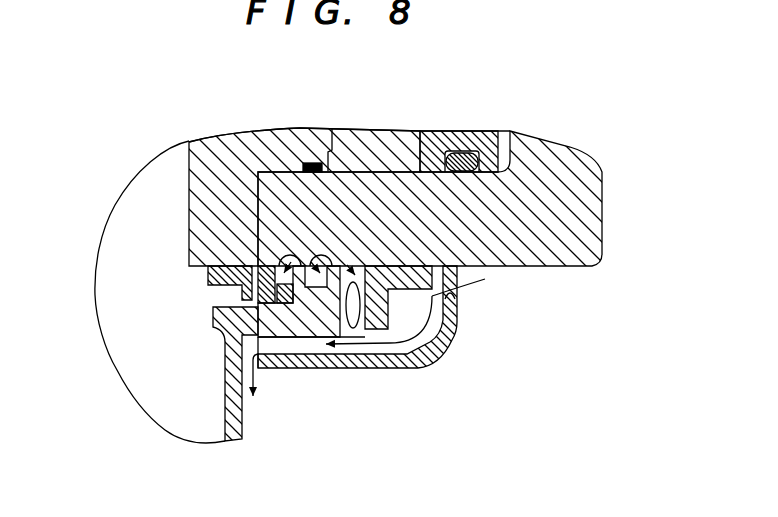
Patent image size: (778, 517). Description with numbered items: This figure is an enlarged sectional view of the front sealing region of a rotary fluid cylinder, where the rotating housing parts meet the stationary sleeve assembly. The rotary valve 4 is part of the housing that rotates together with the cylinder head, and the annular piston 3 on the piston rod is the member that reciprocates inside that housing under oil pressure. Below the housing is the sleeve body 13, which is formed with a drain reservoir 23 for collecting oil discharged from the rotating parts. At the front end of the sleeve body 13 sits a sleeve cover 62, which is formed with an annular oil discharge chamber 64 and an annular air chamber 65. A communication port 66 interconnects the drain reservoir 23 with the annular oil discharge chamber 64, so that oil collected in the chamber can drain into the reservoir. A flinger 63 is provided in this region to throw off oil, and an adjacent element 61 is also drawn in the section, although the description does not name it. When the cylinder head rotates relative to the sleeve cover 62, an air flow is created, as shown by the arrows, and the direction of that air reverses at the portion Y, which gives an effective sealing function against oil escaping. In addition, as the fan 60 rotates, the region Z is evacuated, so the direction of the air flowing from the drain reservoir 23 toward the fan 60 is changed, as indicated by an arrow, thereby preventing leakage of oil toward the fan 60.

The annular piston 3 is at (481, 147).
The rotary valve 4 is at (228, 152).
The sleeve body 13 is at (233, 432).
The drain reservoir 23 is at (182, 398).
The fan 60 is at (410, 340).
The insert 61 is at (440, 329).
The sleeve cover 62 is at (316, 312).
The flinger 63 is at (208, 283).
The annular oil discharge chamber 64 is at (285, 296).
The annular air chamber 65 is at (344, 295).
The communication port 66 is at (266, 300).
The portion Y is at (295, 254).
The region Z is at (343, 254).